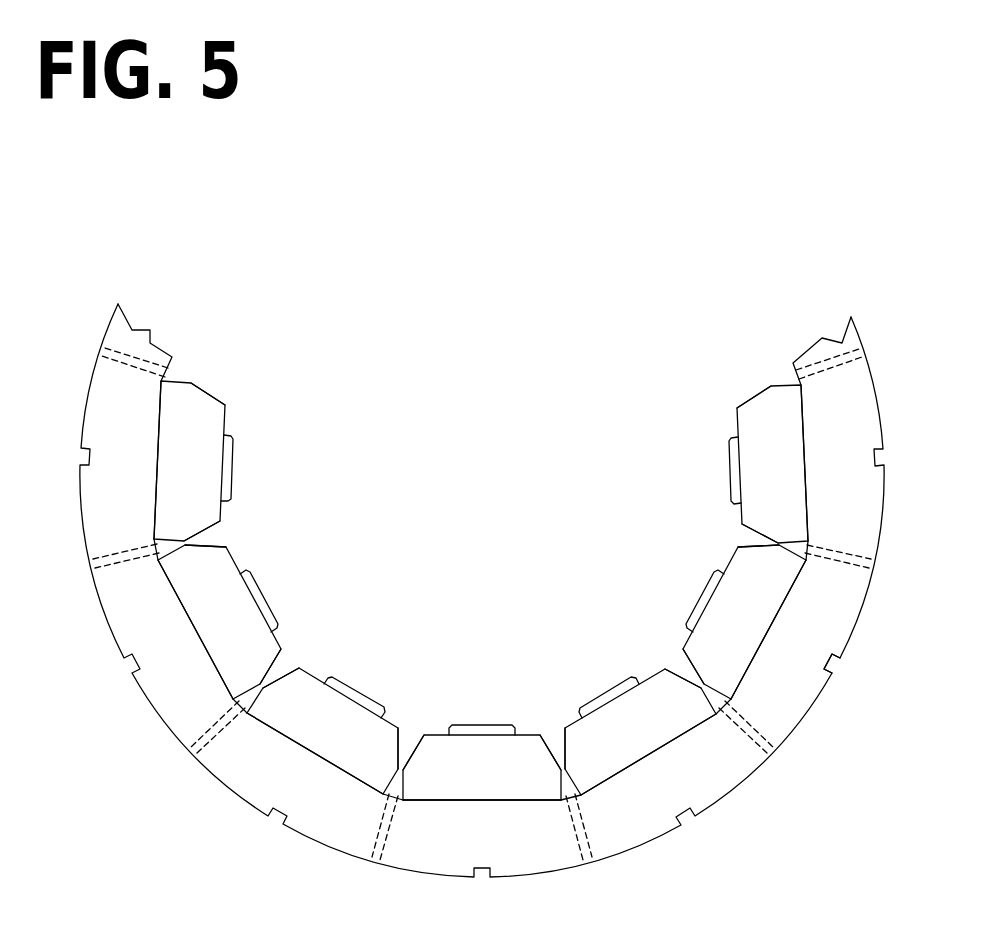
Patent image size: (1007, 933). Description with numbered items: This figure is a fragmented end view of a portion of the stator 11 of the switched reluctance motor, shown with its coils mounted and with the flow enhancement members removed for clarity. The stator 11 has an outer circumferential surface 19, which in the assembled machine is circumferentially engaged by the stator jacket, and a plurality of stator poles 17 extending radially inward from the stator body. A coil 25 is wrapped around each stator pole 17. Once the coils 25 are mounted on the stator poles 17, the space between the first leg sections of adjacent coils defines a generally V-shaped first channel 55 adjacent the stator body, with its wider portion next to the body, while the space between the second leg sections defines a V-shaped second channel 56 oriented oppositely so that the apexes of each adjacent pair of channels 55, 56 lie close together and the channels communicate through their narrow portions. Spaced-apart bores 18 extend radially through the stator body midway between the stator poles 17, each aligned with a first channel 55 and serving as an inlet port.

The stator 11 is at (302, 337).
The stator pole 17 is at (238, 470).
The bore 18 is at (138, 366).
The outer circumferential surface 19 is at (810, 725).
The coil 25 is at (177, 443).
The V-shaped first channel 55 is at (162, 546).
The V-shaped second channel 56 is at (213, 538).